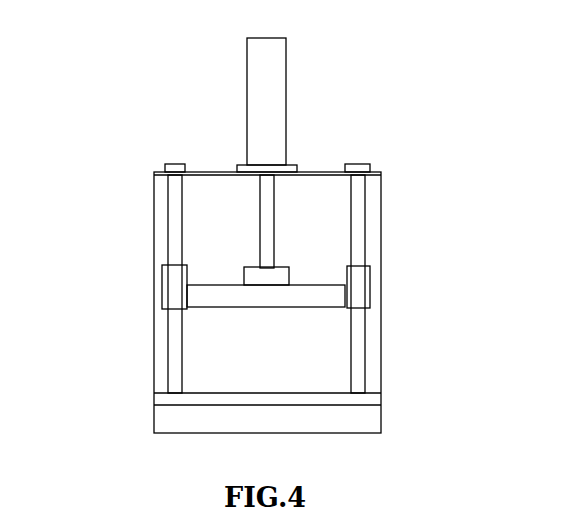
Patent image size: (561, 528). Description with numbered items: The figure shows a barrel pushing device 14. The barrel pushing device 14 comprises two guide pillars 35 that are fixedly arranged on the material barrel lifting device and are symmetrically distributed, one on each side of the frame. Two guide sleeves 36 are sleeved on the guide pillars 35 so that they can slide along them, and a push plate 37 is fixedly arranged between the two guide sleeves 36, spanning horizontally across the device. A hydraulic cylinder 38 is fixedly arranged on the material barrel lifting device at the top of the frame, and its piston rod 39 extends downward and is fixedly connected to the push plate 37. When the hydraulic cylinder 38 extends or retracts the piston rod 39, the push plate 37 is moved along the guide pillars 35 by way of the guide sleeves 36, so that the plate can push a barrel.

The barrel pushing device 14 is at (143, 287).
The guide pillar 35 is at (357, 222).
The guide sleeve 36 is at (360, 288).
The push plate 37 is at (275, 295).
The hydraulic cylinder 38 is at (270, 92).
The piston rod 39 is at (267, 225).